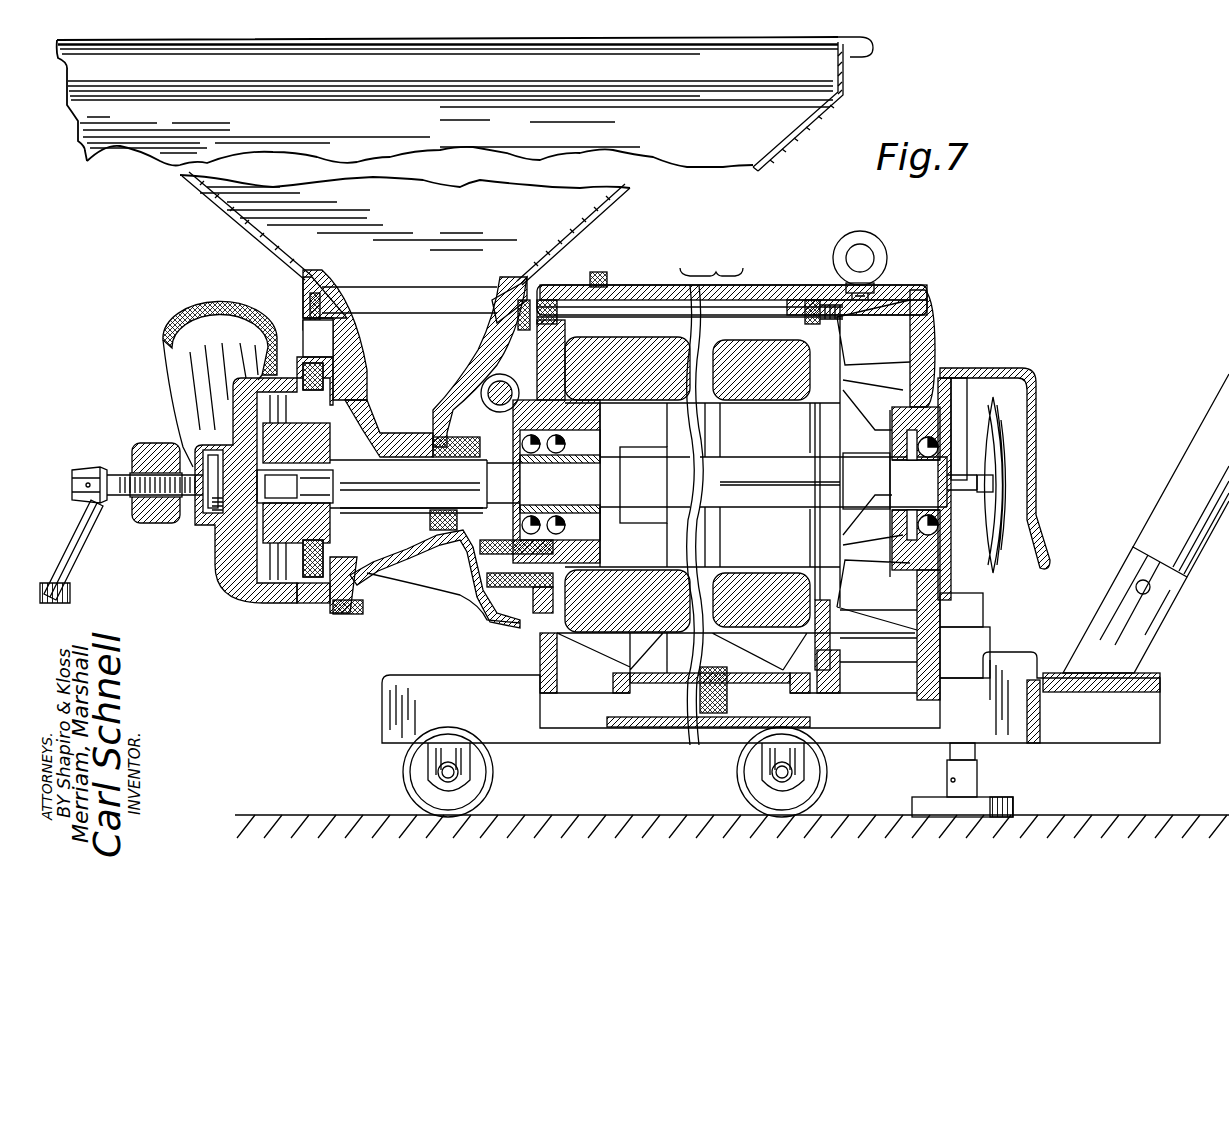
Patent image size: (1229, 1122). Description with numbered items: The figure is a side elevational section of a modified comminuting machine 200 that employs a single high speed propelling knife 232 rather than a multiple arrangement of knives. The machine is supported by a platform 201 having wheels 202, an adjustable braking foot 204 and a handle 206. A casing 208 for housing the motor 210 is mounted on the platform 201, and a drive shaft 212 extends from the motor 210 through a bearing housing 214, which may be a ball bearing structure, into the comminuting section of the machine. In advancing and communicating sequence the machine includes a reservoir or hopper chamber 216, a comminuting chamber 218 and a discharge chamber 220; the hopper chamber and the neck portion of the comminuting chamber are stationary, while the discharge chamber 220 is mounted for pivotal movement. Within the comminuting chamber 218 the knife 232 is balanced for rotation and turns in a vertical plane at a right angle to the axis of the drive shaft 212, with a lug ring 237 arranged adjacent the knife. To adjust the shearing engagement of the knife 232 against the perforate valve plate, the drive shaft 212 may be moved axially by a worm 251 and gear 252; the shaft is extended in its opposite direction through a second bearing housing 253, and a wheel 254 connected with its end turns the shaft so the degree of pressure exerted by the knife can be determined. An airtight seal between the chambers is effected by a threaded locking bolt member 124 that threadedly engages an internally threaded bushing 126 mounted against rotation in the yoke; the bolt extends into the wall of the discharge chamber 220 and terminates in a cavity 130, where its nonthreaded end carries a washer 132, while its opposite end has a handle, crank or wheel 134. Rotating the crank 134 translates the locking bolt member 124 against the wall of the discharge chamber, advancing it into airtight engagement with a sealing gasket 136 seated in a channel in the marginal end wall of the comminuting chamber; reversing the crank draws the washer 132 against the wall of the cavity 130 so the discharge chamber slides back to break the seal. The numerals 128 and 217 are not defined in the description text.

The threaded locking bolt member 124 is at (122, 497).
The internally threaded bushing 126 is at (130, 472).
The clamp block 128 is at (153, 447).
The cavity 130 is at (210, 447).
The washer 132 is at (212, 510).
The handle, crank or wheel 134 is at (83, 553).
The sealing gasket 136 is at (277, 407).
The comminuting machine 200 is at (660, 243).
The platform 201 is at (463, 685).
The wheels 202 is at (493, 772).
The adjustable braking foot 204 is at (993, 798).
The handle 206 is at (1210, 433).
The casing 208 is at (750, 284).
The motor 210 is at (773, 310).
The drive shaft 212 is at (452, 488).
The bearing housing 214 is at (598, 412).
The reservoir or hopper chamber 216 is at (432, 342).
The tank 217 is at (156, 163).
The comminuting chamber 218 is at (330, 614).
The discharge chamber 220 is at (260, 600).
The high speed propelling knife 232 is at (343, 403).
The lug ring 237 is at (355, 408).
The worm 251 is at (525, 317).
The gear 252 is at (477, 400).
The bearing housing 253 is at (960, 400).
The wheel 254 is at (1008, 427).